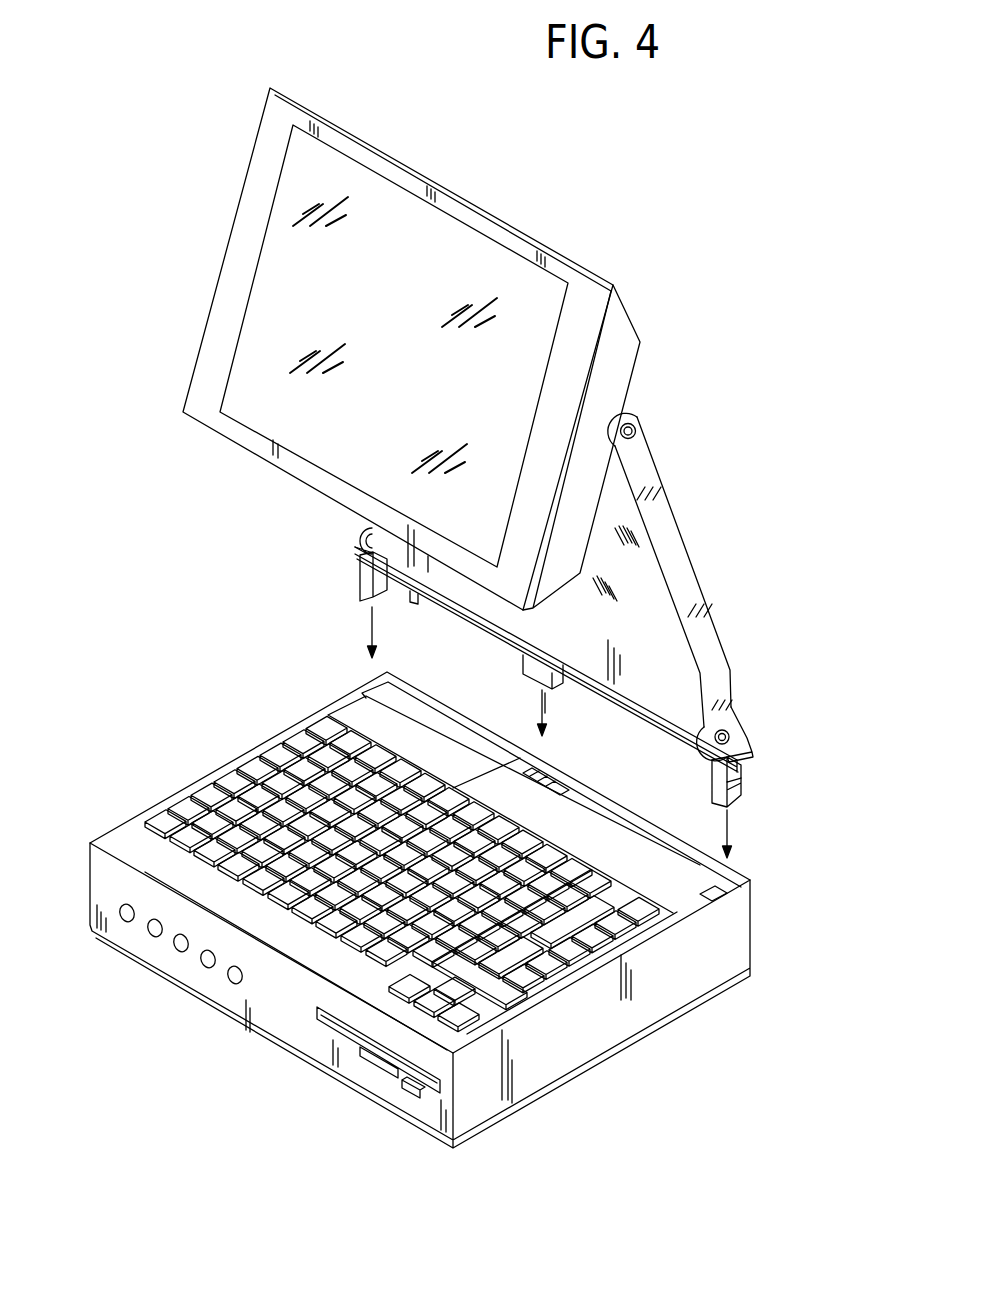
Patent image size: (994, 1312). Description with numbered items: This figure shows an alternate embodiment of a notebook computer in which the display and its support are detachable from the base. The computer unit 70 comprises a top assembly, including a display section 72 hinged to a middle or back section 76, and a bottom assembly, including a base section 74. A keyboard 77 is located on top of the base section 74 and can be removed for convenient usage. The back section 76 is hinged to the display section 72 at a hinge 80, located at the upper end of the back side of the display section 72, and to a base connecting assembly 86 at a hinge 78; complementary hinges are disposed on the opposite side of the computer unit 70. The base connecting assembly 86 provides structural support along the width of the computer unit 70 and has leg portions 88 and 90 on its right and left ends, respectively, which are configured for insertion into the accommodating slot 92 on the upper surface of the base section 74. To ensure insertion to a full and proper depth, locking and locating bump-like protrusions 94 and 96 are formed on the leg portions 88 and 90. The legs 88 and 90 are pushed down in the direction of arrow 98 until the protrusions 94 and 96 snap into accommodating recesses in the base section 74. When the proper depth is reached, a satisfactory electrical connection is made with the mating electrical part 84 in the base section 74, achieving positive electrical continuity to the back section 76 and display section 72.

The computer unit 70 is at (187, 536).
The display section 72 is at (270, 305).
The base section 74 is at (588, 1062).
The middle or back section 76 is at (676, 537).
The keyboard 77 is at (288, 900).
The hinge 78 is at (737, 737).
The hinge 80 is at (636, 428).
The mating electrical part 84 is at (556, 778).
The base connecting assembly 86 is at (427, 601).
The leg portion 88 is at (741, 771).
The leg portion 90 is at (358, 566).
The accommodating slot 92 is at (755, 897).
The locking and locating protrusion 94 is at (747, 781).
The locking and locating protrusion 96 is at (364, 582).
The arrow 98 is at (727, 827).